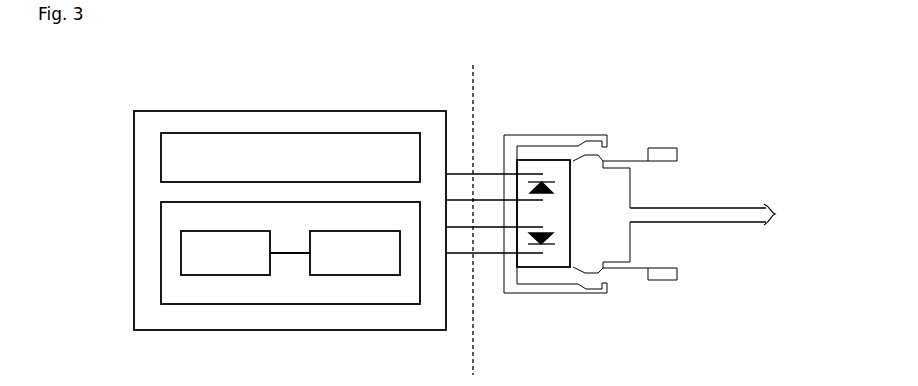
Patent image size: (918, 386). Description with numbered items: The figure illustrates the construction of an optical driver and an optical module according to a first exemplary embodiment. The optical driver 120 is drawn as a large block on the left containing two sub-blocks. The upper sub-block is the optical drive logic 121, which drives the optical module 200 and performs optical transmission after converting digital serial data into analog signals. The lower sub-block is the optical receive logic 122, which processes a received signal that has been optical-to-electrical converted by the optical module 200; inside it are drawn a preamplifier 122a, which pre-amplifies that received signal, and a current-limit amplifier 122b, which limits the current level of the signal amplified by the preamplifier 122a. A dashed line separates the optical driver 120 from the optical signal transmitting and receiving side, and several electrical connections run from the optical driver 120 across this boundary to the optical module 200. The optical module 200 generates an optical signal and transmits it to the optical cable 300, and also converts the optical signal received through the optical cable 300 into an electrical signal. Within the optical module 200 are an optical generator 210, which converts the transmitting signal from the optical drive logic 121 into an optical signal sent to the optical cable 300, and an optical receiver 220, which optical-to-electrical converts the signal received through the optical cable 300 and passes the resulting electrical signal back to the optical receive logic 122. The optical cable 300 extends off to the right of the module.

The optical driver 120 is at (134, 177).
The optical drive logic 121 is at (287, 133).
The optical receive logic 122 is at (235, 304).
The preamplifier 122a is at (369, 276).
The current-limit amplifier 122b is at (180, 257).
The optical module 200 is at (519, 135).
The optical generator 210 is at (543, 183).
The optical receiver 220 is at (541, 244).
The optical cable 300 is at (722, 222).